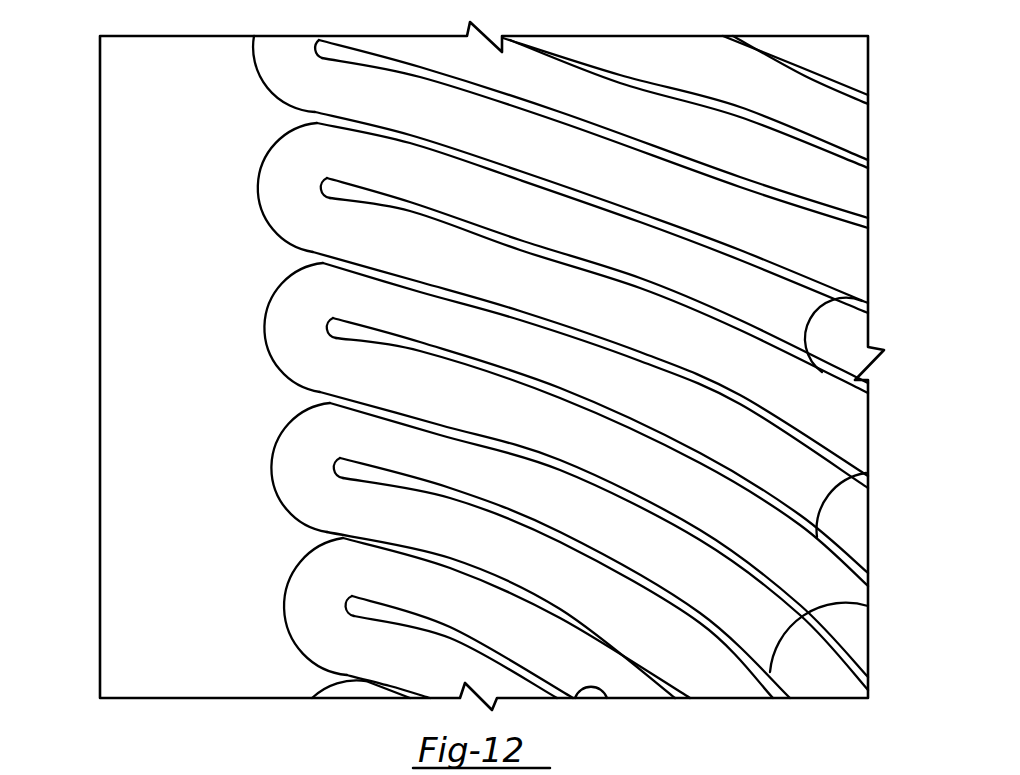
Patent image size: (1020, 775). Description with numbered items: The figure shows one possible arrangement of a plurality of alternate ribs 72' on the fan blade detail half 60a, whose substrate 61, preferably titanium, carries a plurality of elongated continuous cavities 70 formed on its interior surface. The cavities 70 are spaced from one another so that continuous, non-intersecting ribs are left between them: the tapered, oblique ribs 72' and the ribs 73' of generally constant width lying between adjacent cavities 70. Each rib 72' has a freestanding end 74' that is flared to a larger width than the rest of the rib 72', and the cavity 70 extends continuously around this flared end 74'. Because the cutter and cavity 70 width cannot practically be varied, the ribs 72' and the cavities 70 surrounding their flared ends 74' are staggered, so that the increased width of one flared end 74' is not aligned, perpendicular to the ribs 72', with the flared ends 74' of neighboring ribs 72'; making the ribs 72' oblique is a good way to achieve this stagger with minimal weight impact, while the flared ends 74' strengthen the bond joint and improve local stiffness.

The fan blade detail half 60a is at (75, 256).
The substrate 61 is at (108, 90).
The cavity 70 is at (276, 162).
The alternate rib 72' is at (762, 468).
The rib 73' is at (553, 353).
The flared end 74' is at (539, 367).